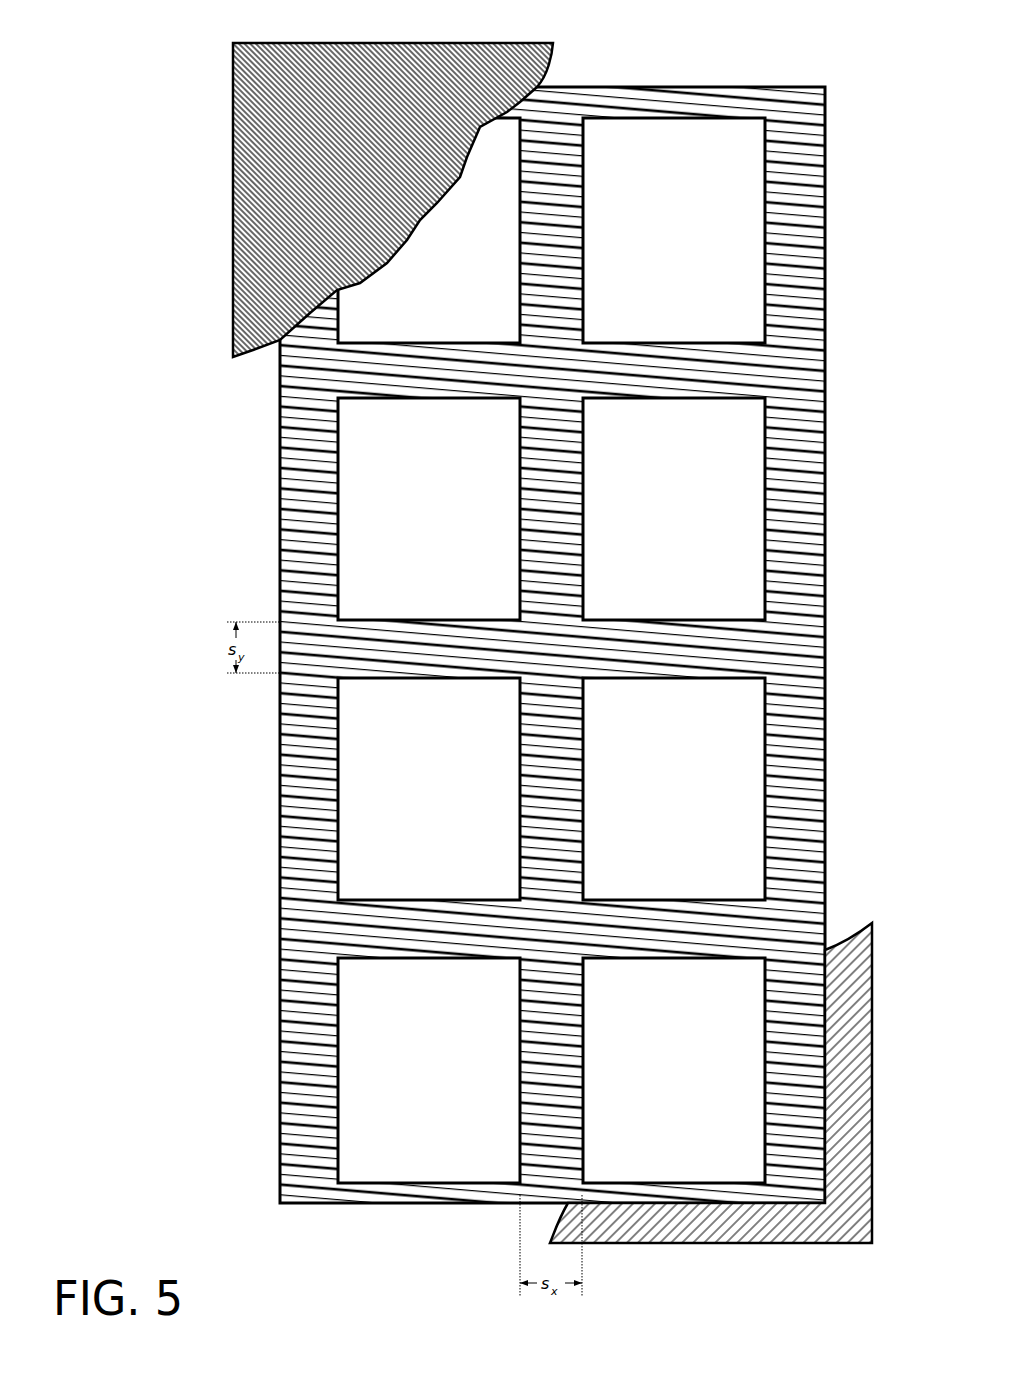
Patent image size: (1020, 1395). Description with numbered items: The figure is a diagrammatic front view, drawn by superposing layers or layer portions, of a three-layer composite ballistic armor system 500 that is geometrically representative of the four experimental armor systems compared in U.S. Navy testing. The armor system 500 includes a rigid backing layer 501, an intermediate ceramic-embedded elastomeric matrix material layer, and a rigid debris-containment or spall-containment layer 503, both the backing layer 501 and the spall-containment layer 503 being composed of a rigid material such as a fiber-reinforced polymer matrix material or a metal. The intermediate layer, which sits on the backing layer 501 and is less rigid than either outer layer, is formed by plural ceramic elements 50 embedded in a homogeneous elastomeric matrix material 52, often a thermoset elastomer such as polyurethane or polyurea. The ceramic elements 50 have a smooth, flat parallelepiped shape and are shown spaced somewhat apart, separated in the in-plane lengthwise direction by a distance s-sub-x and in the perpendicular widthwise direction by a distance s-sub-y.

The composite ballistic armor system 500 is at (467, 676).
The ceramic elements 50 is at (551, 650).
The elastomeric matrix material 52 is at (277, 938).
The backing layer 501 is at (688, 1225).
The spall-containment layer 503 is at (288, 217).